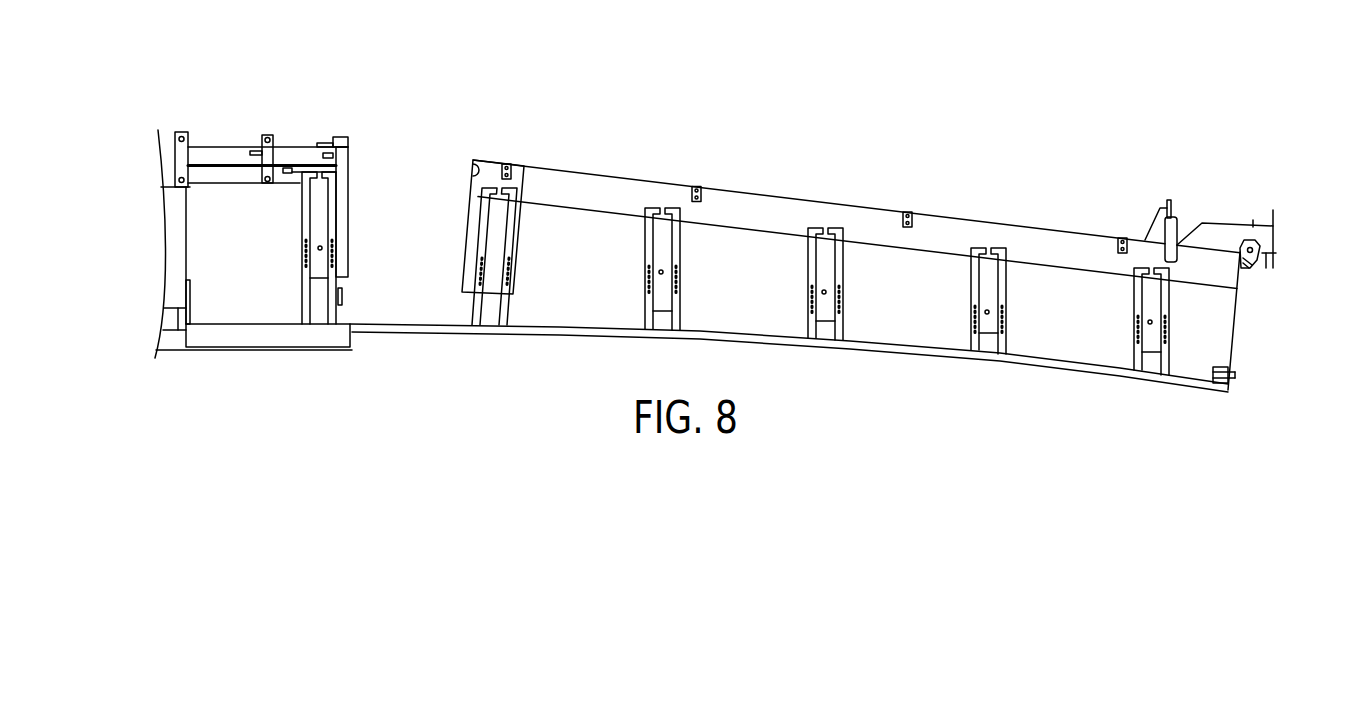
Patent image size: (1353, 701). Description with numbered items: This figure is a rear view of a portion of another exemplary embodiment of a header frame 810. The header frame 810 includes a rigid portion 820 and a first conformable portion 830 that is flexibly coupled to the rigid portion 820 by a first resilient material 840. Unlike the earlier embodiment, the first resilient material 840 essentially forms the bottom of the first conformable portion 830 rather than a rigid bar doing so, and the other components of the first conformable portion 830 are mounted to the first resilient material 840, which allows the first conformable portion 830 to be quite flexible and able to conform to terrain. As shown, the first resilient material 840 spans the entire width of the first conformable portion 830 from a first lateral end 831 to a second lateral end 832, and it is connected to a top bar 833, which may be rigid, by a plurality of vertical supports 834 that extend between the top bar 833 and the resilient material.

The header frame 810 is at (468, 98).
The rigid portion 820 is at (268, 122).
The first conformable portion 830 is at (688, 170).
The first lateral end 831 is at (465, 248).
The second lateral end 832 is at (1237, 323).
The top bar 833 is at (882, 222).
The vertical supports 834 is at (680, 260).
The first resilient material 840 is at (570, 331).